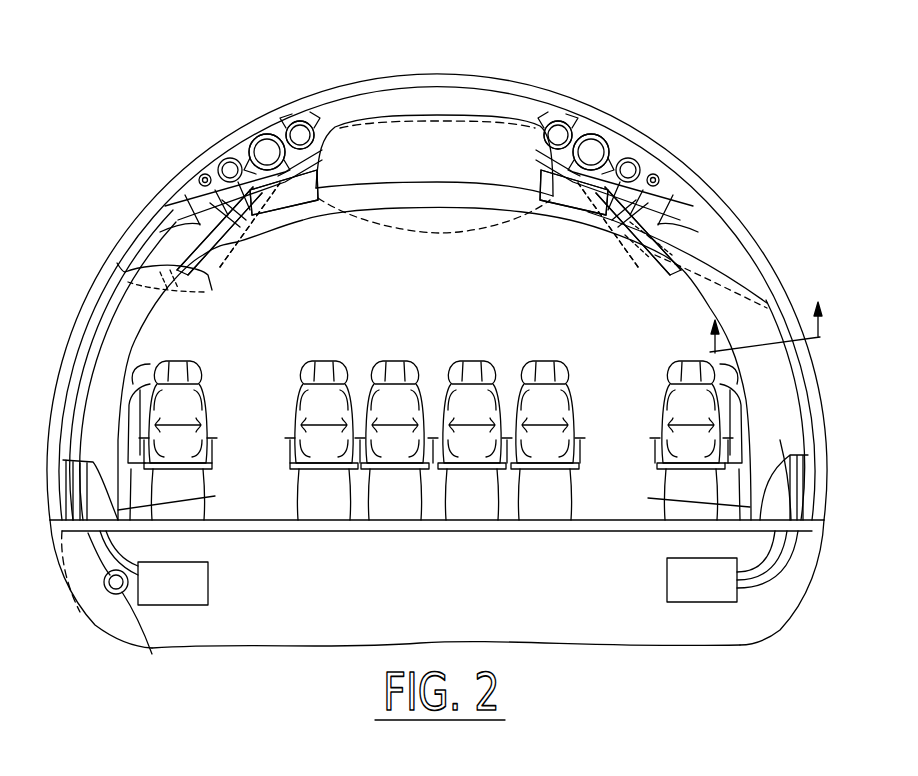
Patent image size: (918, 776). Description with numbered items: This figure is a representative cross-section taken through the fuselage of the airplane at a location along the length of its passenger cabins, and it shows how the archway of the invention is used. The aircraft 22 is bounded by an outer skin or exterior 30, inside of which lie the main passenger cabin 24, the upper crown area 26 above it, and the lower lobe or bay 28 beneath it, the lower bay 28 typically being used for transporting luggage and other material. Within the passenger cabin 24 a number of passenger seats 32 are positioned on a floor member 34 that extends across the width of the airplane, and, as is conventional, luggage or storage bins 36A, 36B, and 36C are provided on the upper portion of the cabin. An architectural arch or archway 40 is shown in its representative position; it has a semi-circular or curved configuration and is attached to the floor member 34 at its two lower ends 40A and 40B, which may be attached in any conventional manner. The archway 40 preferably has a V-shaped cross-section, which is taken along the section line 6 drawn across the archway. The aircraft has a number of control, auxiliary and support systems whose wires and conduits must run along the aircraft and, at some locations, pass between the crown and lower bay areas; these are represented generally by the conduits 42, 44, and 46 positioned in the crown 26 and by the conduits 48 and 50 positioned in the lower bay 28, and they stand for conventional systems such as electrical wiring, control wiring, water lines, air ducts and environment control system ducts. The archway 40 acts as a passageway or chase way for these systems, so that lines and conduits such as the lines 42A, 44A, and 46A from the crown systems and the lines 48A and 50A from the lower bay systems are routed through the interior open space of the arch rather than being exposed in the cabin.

The aircraft fuselage 22 is at (112, 152).
The main passenger cabin 24 is at (442, 297).
The upper crown area 26 is at (415, 100).
The lower lobe or bay 28 is at (500, 594).
The outer skin or exterior 30 is at (772, 278).
The passenger seats 32 is at (312, 400).
The floor member 34 is at (285, 523).
The luggage or storage bin 36A is at (208, 280).
The luggage or storage bin 36B is at (462, 218).
The luggage or storage bin 36C is at (692, 262).
The architectural arch or archway 40 is at (140, 328).
The lower end of archway 40A is at (192, 494).
The lower end of archway 40B is at (672, 494).
The conduit 42 is at (220, 163).
The conduit line 42A is at (230, 203).
The conduit 44 is at (253, 140).
The conduit line 44A is at (237, 222).
The conduit 46 is at (300, 120).
The conduit line 46A is at (280, 213).
The conduit 48 is at (142, 605).
The conduit line 48A is at (93, 562).
The conduit 50 is at (212, 593).
The conduit line 50A is at (140, 558).
The section line 6 is at (763, 324).